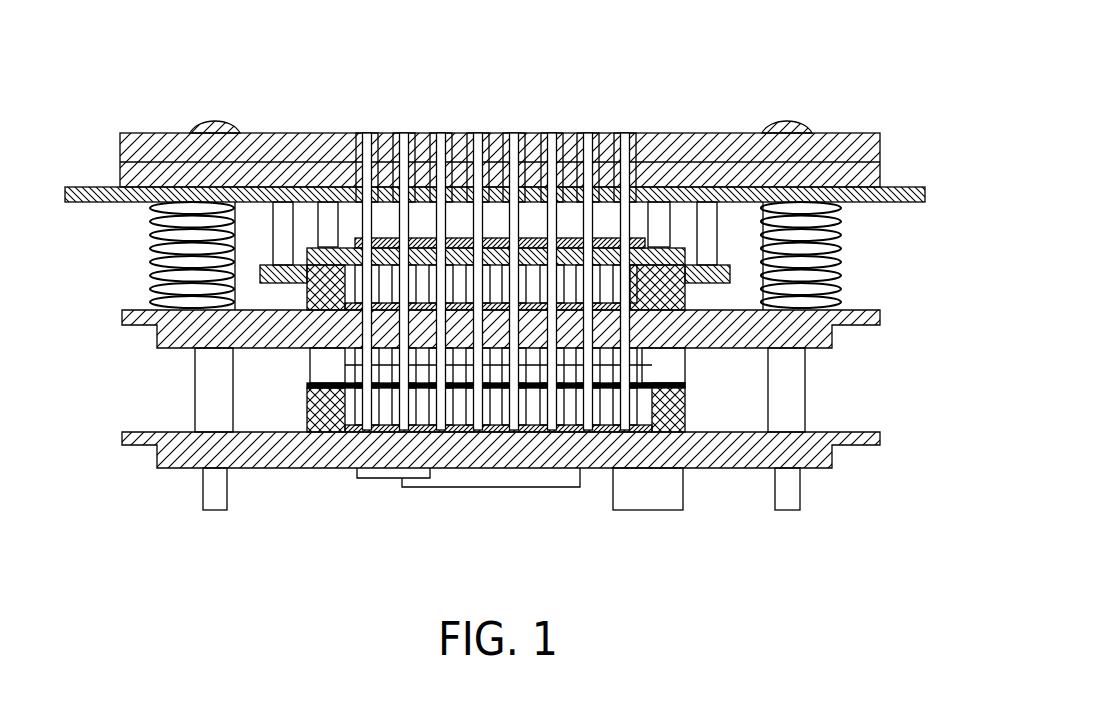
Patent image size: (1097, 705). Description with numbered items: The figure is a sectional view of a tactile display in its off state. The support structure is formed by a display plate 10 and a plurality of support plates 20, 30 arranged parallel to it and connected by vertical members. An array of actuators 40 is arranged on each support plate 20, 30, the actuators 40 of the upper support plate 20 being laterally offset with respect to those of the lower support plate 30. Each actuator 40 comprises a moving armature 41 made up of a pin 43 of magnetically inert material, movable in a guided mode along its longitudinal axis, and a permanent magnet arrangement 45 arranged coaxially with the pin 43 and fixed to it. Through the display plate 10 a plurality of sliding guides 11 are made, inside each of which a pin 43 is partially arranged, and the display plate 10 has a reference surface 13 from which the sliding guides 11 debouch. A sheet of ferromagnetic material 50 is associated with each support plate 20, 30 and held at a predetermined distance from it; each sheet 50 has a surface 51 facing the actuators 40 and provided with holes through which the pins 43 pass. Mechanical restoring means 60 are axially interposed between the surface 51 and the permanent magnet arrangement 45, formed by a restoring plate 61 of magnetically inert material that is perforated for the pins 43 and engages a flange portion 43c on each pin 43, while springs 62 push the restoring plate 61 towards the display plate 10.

The display plate 10 is at (118, 150).
The sliding guide 11 is at (403, 133).
The reference surface 13 is at (699, 190).
The support plate 20 is at (113, 318).
The support plate 30 is at (113, 440).
The actuator 40 is at (466, 440).
The moving armature 41 is at (562, 250).
The pin 43 is at (448, 240).
The flange portion 43c is at (500, 246).
The permanent magnet arrangement 45 is at (327, 247).
The sheet of ferromagnetic material 50 is at (692, 262).
The surface 51 is at (820, 348).
The mechanical restoring means 60 is at (850, 240).
The restoring plate 61 is at (905, 186).
The spring 62 is at (150, 258).